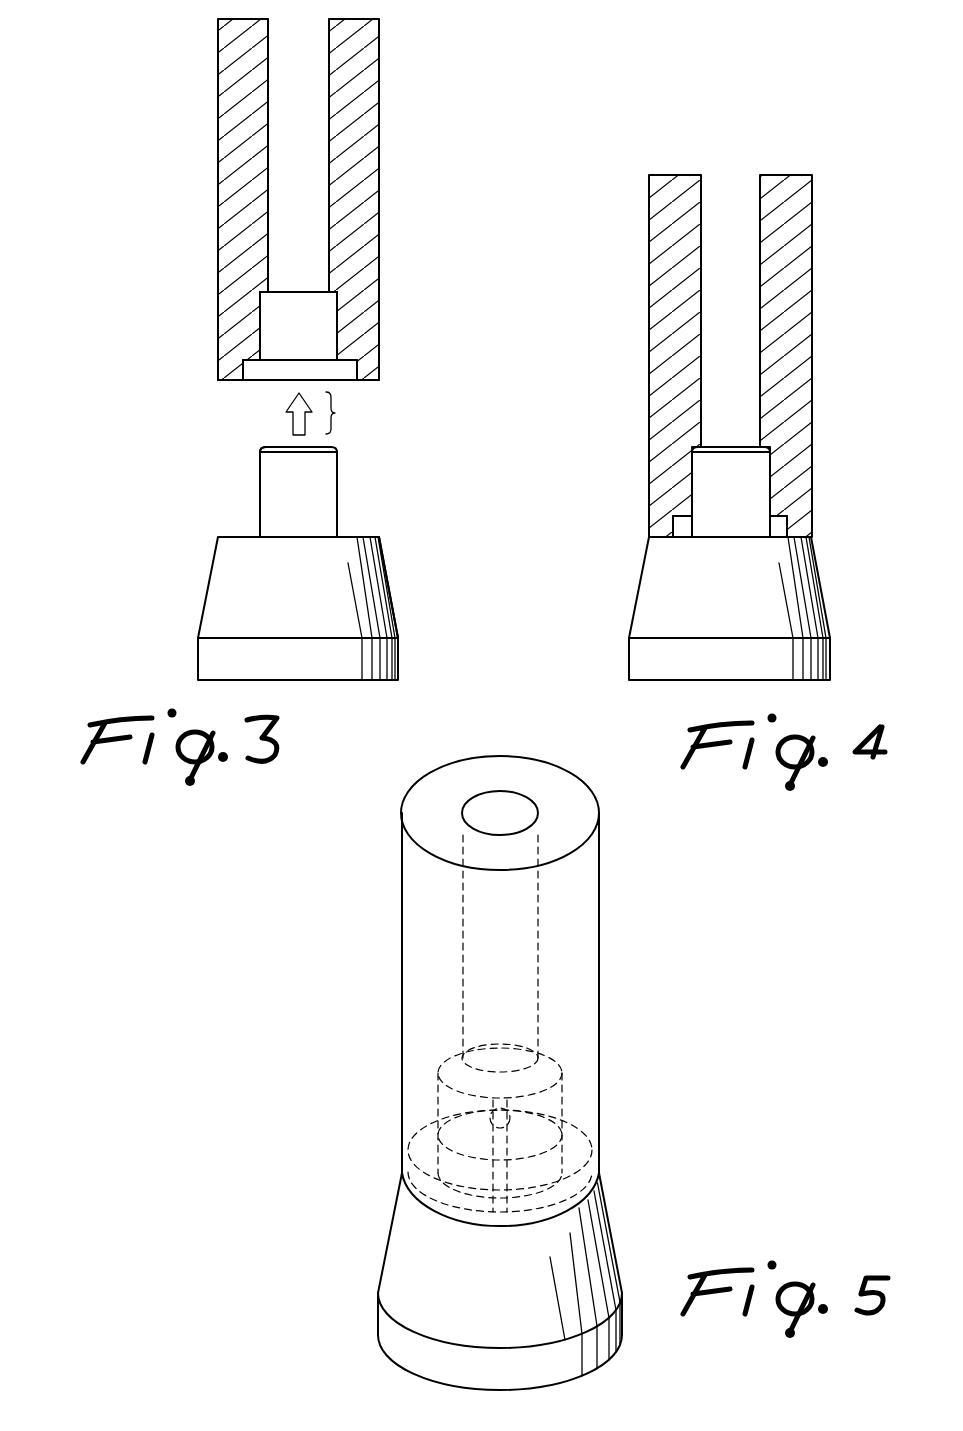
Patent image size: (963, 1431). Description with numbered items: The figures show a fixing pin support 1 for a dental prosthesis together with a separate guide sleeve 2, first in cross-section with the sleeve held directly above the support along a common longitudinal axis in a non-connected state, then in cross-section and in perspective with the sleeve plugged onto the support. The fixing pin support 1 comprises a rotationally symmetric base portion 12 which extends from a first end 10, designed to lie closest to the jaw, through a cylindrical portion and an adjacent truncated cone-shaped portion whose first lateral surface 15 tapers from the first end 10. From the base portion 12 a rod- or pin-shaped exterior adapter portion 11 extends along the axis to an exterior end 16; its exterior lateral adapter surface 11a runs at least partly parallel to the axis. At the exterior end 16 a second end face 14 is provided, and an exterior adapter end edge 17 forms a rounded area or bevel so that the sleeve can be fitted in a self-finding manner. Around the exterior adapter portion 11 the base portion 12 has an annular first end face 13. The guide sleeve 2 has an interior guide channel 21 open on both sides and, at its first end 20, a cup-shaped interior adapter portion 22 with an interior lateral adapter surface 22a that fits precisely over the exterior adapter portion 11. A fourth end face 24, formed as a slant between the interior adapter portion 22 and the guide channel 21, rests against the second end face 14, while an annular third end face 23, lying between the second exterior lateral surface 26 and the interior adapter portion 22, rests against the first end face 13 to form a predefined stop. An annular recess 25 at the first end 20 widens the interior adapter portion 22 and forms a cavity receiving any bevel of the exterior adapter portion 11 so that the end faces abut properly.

In FIG. 3, the fixing pin support 1 is at (118, 537).
In FIG. 4, the fixing pin support 1 is at (846, 597).
In FIG. 5, the fixing pin support 1 is at (634, 1218).
In FIG. 3, the guide sleeve 2 is at (184, 98).
In FIG. 4, the guide sleeve 2 is at (822, 321).
In FIG. 5, the guide sleeve 2 is at (634, 969).
In FIG. 3, the first end 10 is at (340, 680).
In FIG. 3, the exterior adapter portion 11 is at (236, 505).
In FIG. 3, the exterior lateral adapter surface 11a is at (337, 508).
In FIG. 3, the base portion 12 is at (180, 593).
In FIG. 3, the first end face 13 is at (360, 537).
In FIG. 3, the second end face 14 is at (275, 447).
In FIG. 3, the first lateral surface 15 is at (390, 585).
In FIG. 3, the exterior end 16 is at (238, 453).
In FIG. 3, the exterior adapter end edge 17 is at (318, 447).
In FIG. 3, the first end 20 is at (218, 382).
In FIG. 3, the interior guide channel 21 is at (293, 108).
In FIG. 5, the interior guide channel 21 is at (505, 808).
In FIG. 3, the interior adapter portion 22 is at (298, 320).
In FIG. 3, the interior lateral adapter surface 22a is at (260, 318).
In FIG. 3, the third end face 23 is at (368, 381).
In FIG. 3, the fourth end face 24 is at (300, 292).
In FIG. 3, the recess 25 is at (337, 370).
In FIG. 4, the recess 25 is at (780, 527).
In FIG. 3, the second exterior lateral surface 26 is at (380, 148).